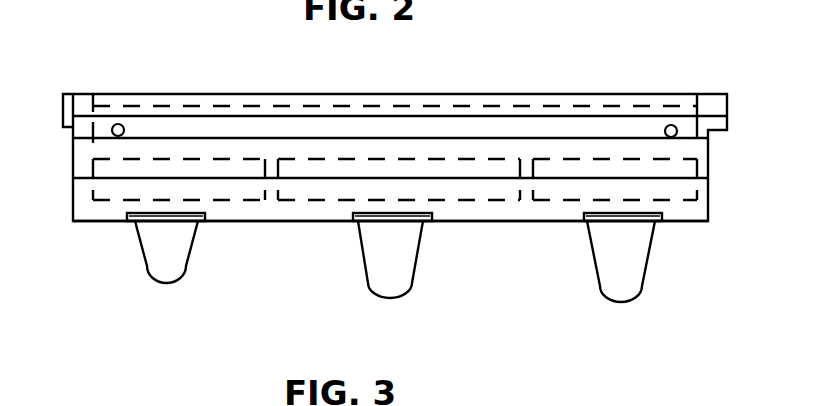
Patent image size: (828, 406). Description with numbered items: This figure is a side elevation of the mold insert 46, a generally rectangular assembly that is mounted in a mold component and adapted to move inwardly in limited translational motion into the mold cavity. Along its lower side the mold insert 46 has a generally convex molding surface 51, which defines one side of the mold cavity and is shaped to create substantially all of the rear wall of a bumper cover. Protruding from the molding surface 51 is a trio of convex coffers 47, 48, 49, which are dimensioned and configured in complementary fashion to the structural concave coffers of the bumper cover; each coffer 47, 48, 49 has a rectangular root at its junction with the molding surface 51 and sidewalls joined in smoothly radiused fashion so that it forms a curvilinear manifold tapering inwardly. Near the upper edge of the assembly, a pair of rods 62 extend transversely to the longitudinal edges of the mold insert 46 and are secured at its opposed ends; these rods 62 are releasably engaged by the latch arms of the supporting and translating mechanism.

The mold insert 46 is at (118, 78).
The coffer 47 is at (162, 256).
The coffer 48 is at (390, 269).
The coffer 49 is at (625, 263).
The molding surface 51 is at (297, 221).
The rod 62 is at (122, 125).